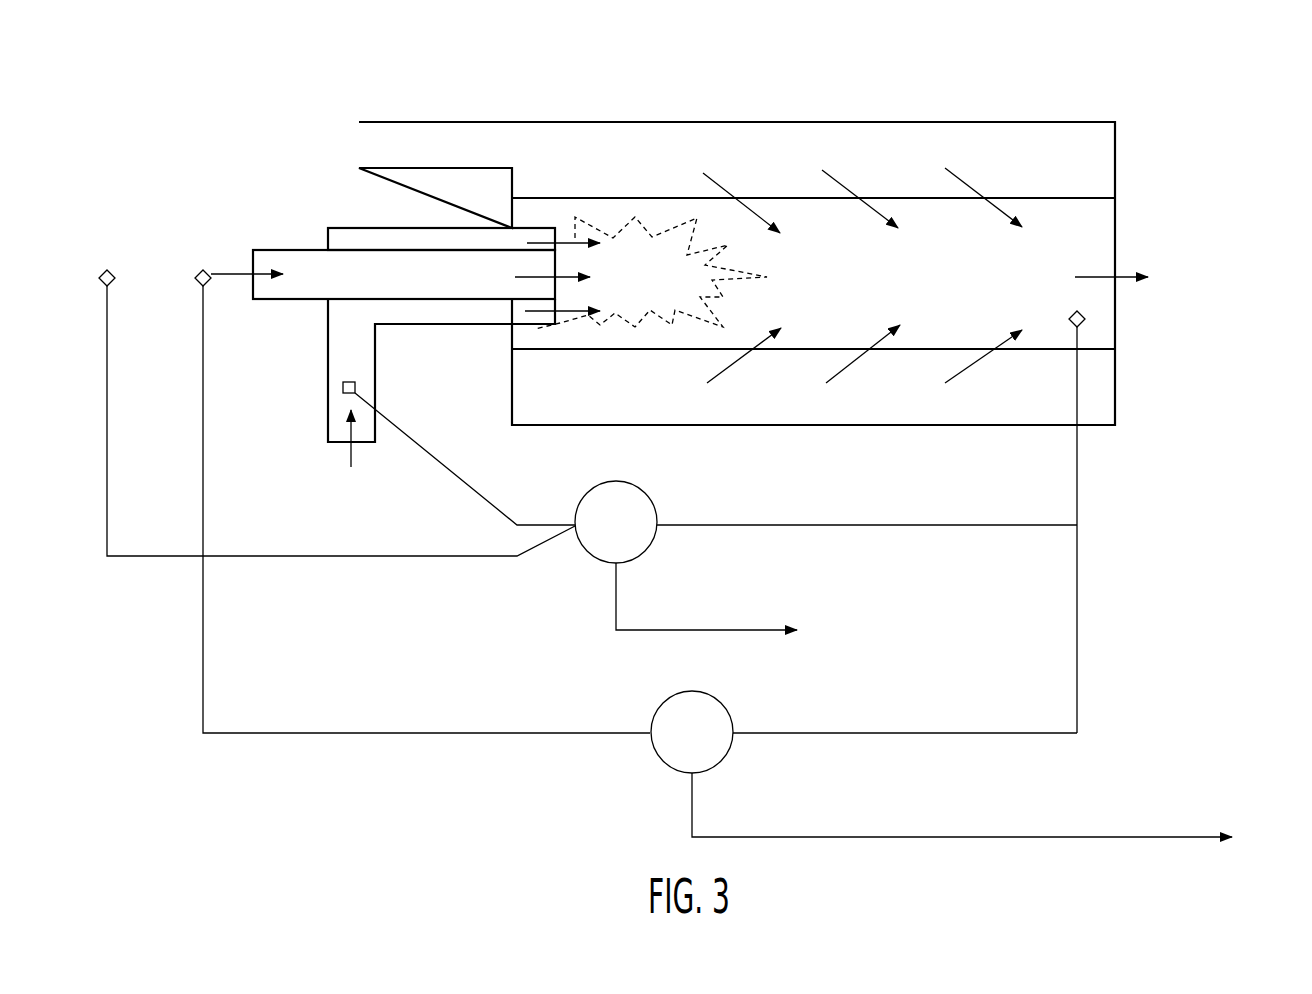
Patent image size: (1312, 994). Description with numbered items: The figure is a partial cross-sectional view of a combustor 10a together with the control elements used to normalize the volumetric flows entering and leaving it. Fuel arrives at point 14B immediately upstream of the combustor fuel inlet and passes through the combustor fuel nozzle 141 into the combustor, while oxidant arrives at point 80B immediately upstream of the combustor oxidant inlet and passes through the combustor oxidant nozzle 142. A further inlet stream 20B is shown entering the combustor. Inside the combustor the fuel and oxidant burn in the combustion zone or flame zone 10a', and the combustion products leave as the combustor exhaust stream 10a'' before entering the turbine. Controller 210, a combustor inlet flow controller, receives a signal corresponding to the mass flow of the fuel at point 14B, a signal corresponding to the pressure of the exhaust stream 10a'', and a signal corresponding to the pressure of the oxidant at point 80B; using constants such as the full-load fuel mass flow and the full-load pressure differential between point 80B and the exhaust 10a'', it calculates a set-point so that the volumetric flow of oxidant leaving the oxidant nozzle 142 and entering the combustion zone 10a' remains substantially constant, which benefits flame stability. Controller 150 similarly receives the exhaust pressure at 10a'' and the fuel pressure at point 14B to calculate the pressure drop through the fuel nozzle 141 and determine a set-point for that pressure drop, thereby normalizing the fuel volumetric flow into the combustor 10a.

The combustor 10a is at (737, 228).
The compressed air flow 20B is at (400, 147).
The combustor fuel nozzle 141 is at (280, 250).
The fuel stream point 14B is at (374, 498).
The combustor oxidant nozzle 142 is at (375, 368).
The oxidant stream point 80B is at (350, 457).
The combustion zone 10a' is at (641, 273).
The combustor exhaust stream 10a'' is at (1139, 275).
The controller 210 is at (830, 522).
The controller 150 is at (978, 773).